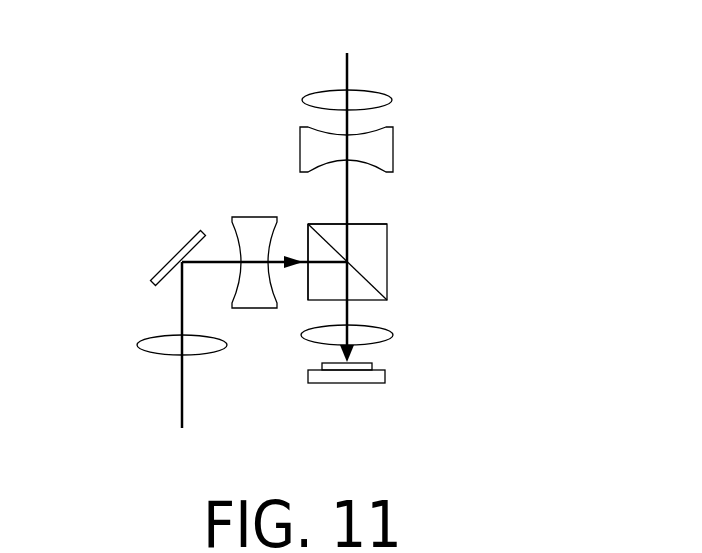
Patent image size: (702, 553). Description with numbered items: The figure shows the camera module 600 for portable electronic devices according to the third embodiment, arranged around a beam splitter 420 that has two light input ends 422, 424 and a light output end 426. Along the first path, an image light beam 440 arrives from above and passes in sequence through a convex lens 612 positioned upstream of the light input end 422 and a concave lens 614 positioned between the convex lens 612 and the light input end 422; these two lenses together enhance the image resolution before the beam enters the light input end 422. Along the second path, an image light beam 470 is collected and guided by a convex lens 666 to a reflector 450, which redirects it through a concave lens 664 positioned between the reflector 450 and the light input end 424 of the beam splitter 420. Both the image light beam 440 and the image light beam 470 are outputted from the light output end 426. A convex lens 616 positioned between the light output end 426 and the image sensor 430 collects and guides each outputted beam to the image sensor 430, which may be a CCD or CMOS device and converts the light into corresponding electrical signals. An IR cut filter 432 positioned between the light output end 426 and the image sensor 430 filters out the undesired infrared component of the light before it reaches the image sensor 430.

The camera module 600 is at (565, 63).
The image light beam 440 is at (349, 189).
The convex lens 612 is at (303, 101).
The concave lens 614 is at (300, 147).
The concave lens 664 is at (231, 223).
The light input end 424 is at (308, 240).
The reflector 450 is at (175, 256).
The beam splitter 420 is at (396, 253).
The light input end 422 is at (368, 225).
The light output end 426 is at (383, 304).
The convex lens 616 is at (393, 335).
The IR cut filter 432 is at (372, 364).
The image sensor 430 is at (385, 375).
The convex lens 666 is at (137, 347).
The image light beam 470 is at (182, 366).